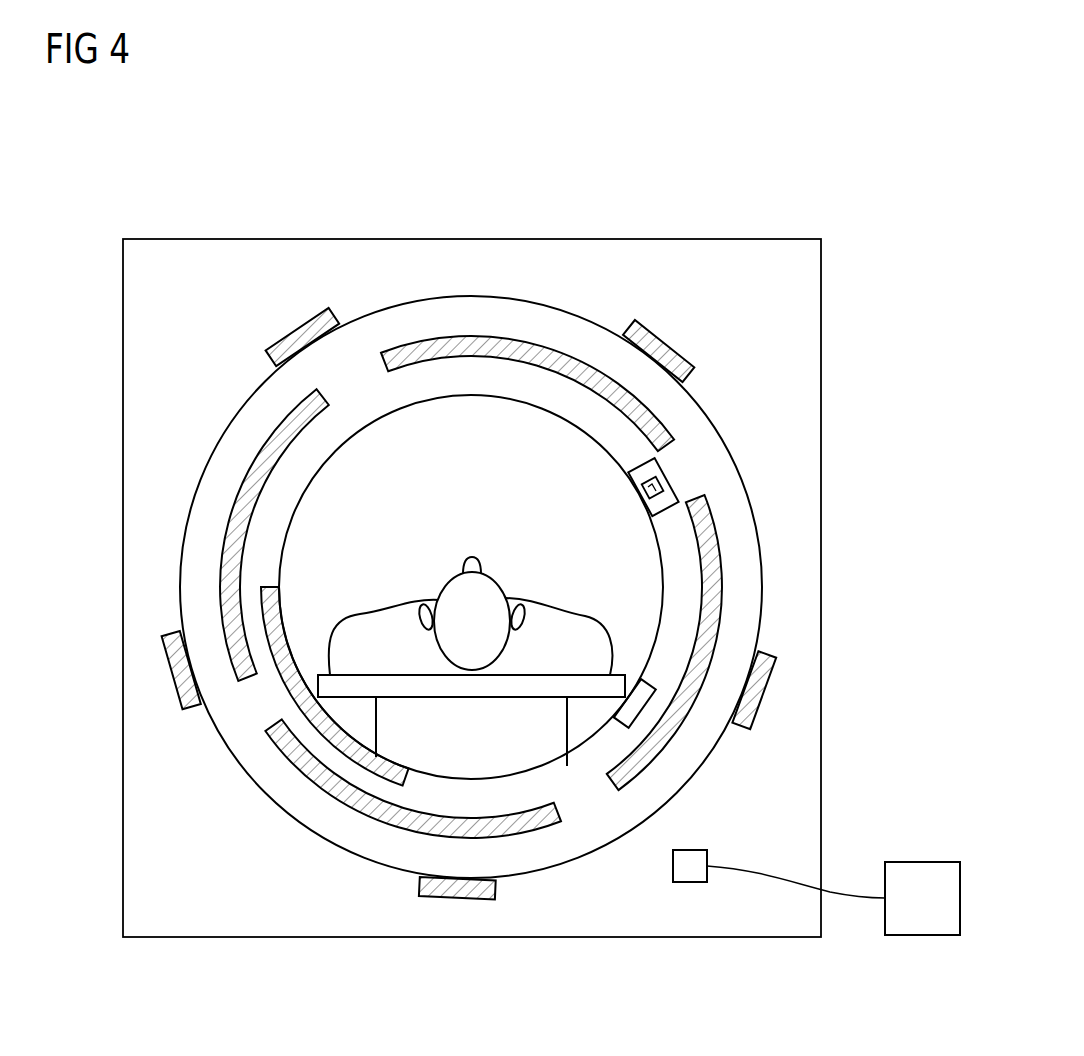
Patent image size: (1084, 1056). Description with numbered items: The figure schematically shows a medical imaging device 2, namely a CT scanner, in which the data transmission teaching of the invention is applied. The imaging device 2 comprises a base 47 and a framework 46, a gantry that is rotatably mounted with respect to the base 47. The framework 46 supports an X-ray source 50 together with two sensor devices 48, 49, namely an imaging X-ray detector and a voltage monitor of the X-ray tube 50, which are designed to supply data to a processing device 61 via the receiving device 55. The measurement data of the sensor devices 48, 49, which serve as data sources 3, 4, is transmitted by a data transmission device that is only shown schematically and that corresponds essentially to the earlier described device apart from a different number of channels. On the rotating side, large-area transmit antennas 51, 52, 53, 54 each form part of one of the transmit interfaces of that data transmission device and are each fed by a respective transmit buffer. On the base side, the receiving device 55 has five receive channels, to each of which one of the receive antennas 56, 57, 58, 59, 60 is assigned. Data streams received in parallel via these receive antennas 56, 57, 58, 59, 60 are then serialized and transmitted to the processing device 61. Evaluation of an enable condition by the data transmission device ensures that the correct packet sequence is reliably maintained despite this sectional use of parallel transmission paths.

The medical imaging device 2 is at (603, 182).
The data source 3 is at (227, 686).
The data source 4 is at (778, 482).
The framework 46 is at (771, 473).
The base 47 is at (823, 334).
The sensor device 48 is at (295, 697).
The sensor device 49 is at (651, 490).
The X-ray source 50 is at (477, 580).
The transmit antenna 51 is at (445, 345).
The transmit antenna 52 is at (717, 540).
The transmit antenna 53 is at (373, 813).
The transmit antenna 54 is at (228, 548).
The receiving device 55 is at (692, 882).
The receive antenna 56 is at (294, 348).
The receive antenna 57 is at (667, 360).
The receive antenna 58 is at (753, 703).
The receive antenna 59 is at (465, 892).
The receive antenna 60 is at (178, 672).
The processing device 61 is at (922, 935).